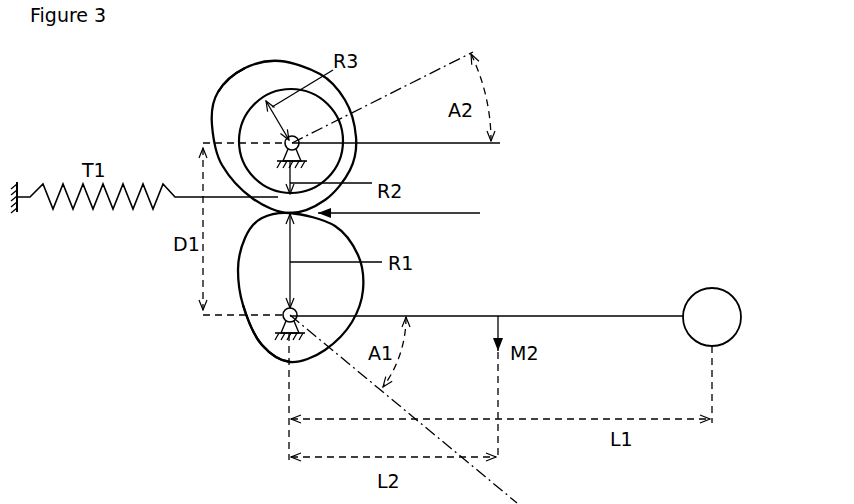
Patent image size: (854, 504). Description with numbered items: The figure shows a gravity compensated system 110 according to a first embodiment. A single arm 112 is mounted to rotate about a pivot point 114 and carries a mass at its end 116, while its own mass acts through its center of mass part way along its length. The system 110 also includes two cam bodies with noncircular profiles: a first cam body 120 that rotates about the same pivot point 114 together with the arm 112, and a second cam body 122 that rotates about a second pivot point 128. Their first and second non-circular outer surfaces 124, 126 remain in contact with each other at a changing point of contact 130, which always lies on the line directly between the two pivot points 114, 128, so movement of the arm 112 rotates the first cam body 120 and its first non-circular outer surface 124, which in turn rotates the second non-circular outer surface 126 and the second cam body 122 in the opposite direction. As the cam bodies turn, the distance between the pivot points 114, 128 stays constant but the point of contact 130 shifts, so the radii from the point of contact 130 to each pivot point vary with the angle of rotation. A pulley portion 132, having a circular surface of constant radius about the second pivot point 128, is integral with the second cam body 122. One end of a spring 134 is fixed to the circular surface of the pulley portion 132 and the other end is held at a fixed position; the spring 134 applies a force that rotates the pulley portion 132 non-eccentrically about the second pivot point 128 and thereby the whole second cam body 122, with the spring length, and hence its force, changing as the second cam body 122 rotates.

The gravity compensated system 110 is at (584, 131).
The arm 112 is at (477, 313).
The pivot point 114 is at (280, 320).
The end of arm 116 is at (723, 288).
The first cam body 120 is at (253, 265).
The second cam body 122 is at (233, 79).
The first non-circular outer surface 124 is at (265, 352).
The second non-circular outer surface 126 is at (293, 62).
The second pivot point 128 is at (299, 139).
The point of contact 130 is at (427, 209).
The pulley portion 132 is at (242, 117).
The spring 134 is at (62, 210).